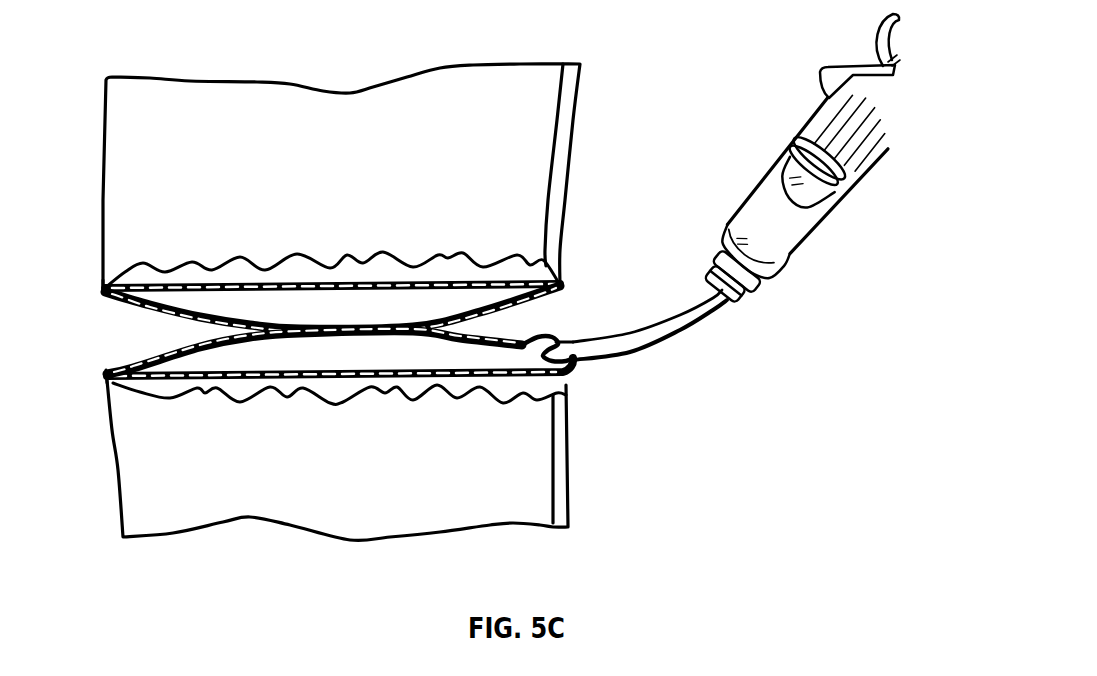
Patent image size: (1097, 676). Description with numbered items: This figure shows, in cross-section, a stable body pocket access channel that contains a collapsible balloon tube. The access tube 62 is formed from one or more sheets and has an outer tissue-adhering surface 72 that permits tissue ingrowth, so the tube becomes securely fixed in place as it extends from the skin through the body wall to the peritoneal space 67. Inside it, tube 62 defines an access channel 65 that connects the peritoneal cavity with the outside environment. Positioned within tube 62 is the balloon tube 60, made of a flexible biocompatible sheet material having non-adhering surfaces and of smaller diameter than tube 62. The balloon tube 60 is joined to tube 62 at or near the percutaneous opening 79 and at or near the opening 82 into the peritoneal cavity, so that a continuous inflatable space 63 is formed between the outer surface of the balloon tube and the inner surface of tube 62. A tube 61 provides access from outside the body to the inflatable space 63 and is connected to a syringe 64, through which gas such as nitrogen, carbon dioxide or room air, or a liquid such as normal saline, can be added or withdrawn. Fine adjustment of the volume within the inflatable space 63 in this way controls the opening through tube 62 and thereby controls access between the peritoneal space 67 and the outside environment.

The balloon tube 60 is at (396, 352).
The tube 61 is at (650, 334).
The tube 62 is at (349, 405).
The inflatable space 63 is at (328, 316).
The syringe 64 is at (757, 197).
The access channel 65 is at (103, 290).
The peritoneal space 67 is at (118, 538).
The tissue-adhering surface 72 is at (357, 245).
The percutaneous opening 79 is at (562, 285).
The opening 82 is at (97, 270).